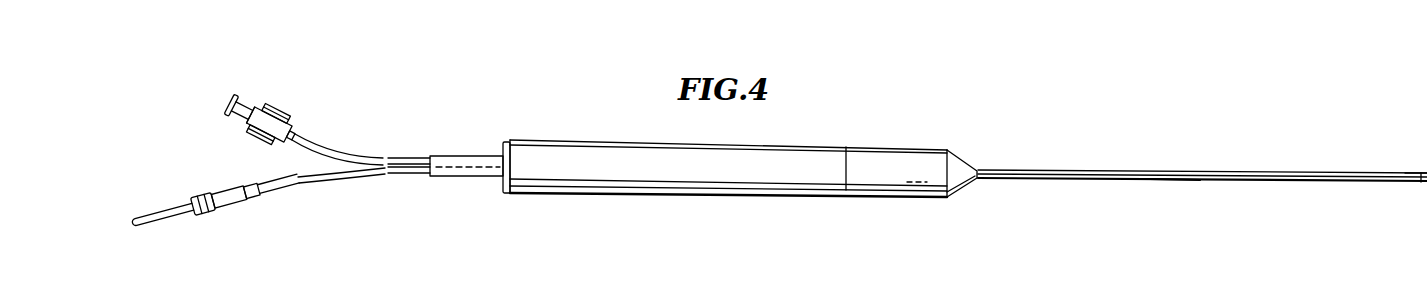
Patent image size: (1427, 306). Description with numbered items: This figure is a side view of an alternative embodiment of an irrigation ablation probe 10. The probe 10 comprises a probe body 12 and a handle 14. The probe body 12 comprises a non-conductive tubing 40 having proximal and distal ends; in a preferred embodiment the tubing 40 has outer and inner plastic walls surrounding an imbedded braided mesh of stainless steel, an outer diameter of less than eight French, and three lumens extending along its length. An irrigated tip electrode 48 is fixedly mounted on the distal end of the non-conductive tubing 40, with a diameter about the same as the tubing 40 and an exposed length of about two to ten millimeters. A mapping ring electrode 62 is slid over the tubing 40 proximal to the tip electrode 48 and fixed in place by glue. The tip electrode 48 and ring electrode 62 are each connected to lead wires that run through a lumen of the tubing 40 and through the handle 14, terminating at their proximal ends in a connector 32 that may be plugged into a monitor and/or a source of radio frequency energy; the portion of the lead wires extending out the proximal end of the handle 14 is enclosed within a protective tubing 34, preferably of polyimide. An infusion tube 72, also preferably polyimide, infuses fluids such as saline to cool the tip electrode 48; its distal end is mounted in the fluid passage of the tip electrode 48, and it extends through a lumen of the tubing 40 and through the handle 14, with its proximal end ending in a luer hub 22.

The probe 10 is at (972, 146).
The probe body 12 is at (1258, 170).
The handle 14 is at (570, 136).
The luer hub 22 is at (288, 113).
The connector 32 is at (223, 200).
The protective tubing 34 is at (327, 180).
The non-conductive tubing 40 is at (1172, 180).
The irrigated tip electrode 48 is at (1426, 196).
The mapping ring electrode 62 is at (1421, 173).
The infusion tube 72 is at (342, 150).